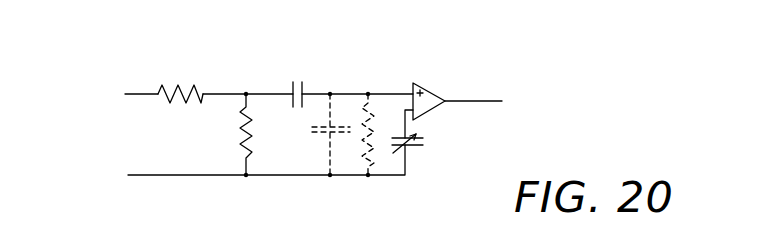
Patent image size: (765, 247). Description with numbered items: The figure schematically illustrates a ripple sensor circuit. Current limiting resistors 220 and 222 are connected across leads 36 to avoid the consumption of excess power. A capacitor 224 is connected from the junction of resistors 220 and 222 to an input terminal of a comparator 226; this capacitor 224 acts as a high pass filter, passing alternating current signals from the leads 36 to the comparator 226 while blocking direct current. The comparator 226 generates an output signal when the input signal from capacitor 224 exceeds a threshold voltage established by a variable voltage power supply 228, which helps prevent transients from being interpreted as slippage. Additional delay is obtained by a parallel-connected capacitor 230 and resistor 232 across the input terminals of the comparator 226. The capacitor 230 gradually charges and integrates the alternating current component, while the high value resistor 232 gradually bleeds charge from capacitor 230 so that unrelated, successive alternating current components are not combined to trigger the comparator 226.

The leads 36 is at (152, 96).
The current limiting resistor 220 is at (185, 91).
The current limiting resistor 222 is at (235, 138).
The capacitor 224 is at (296, 79).
The comparator 226 is at (428, 88).
The variable voltage power supply 228 is at (420, 134).
The capacitor 230 is at (325, 140).
The resistor 232 is at (364, 115).